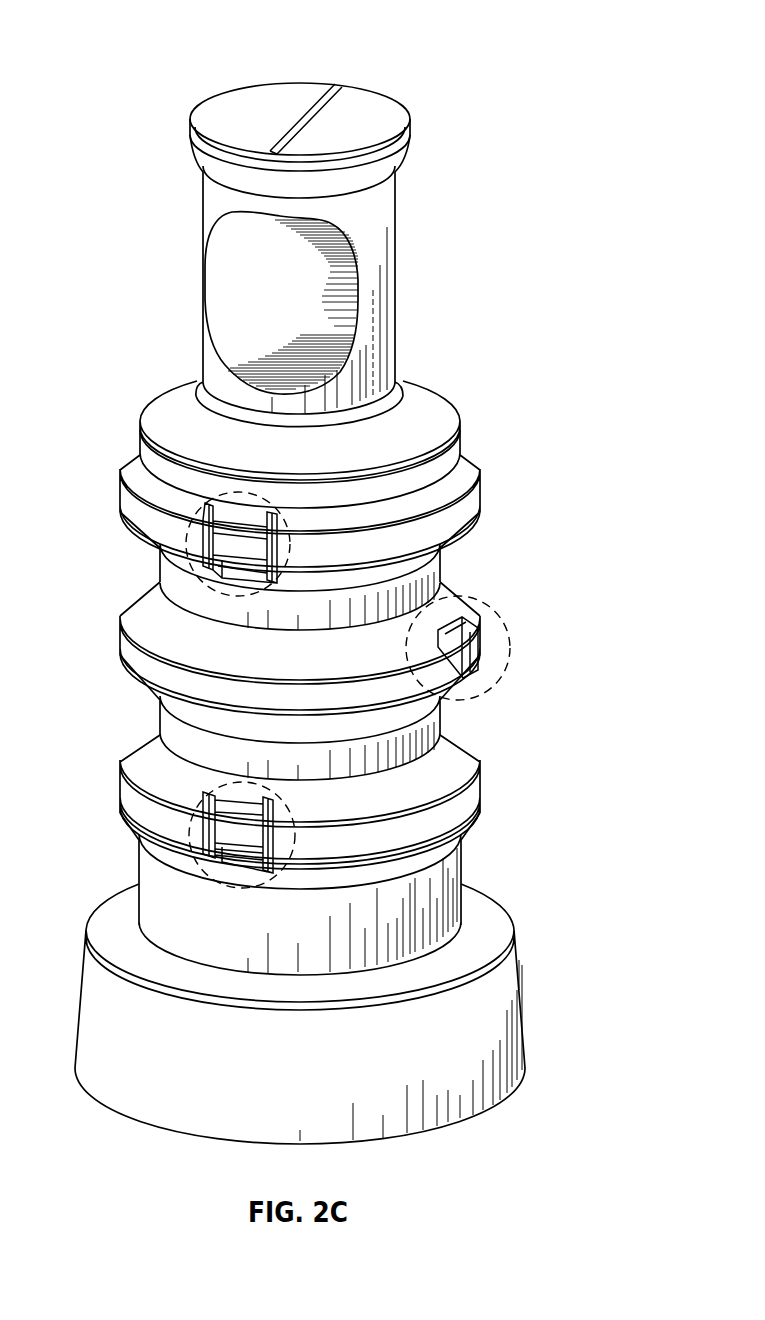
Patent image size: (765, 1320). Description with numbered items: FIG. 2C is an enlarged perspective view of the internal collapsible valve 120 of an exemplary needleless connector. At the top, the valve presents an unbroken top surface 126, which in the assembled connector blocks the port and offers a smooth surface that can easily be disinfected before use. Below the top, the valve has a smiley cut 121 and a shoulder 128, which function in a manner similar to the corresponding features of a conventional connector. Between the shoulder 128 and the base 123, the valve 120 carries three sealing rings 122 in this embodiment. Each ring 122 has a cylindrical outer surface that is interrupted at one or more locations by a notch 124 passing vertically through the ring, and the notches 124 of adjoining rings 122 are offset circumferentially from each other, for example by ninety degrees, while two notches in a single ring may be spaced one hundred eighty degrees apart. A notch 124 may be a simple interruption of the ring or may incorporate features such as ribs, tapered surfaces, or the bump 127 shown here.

The collapsible valve 120 is at (155, 50).
The smiley cut 121 is at (227, 288).
The sealing ring 122 is at (123, 510).
The base 123 is at (515, 1000).
The notch 124 is at (183, 538).
The top surface 126 is at (350, 105).
The bump 127 is at (245, 845).
The shoulder 128 is at (440, 406).